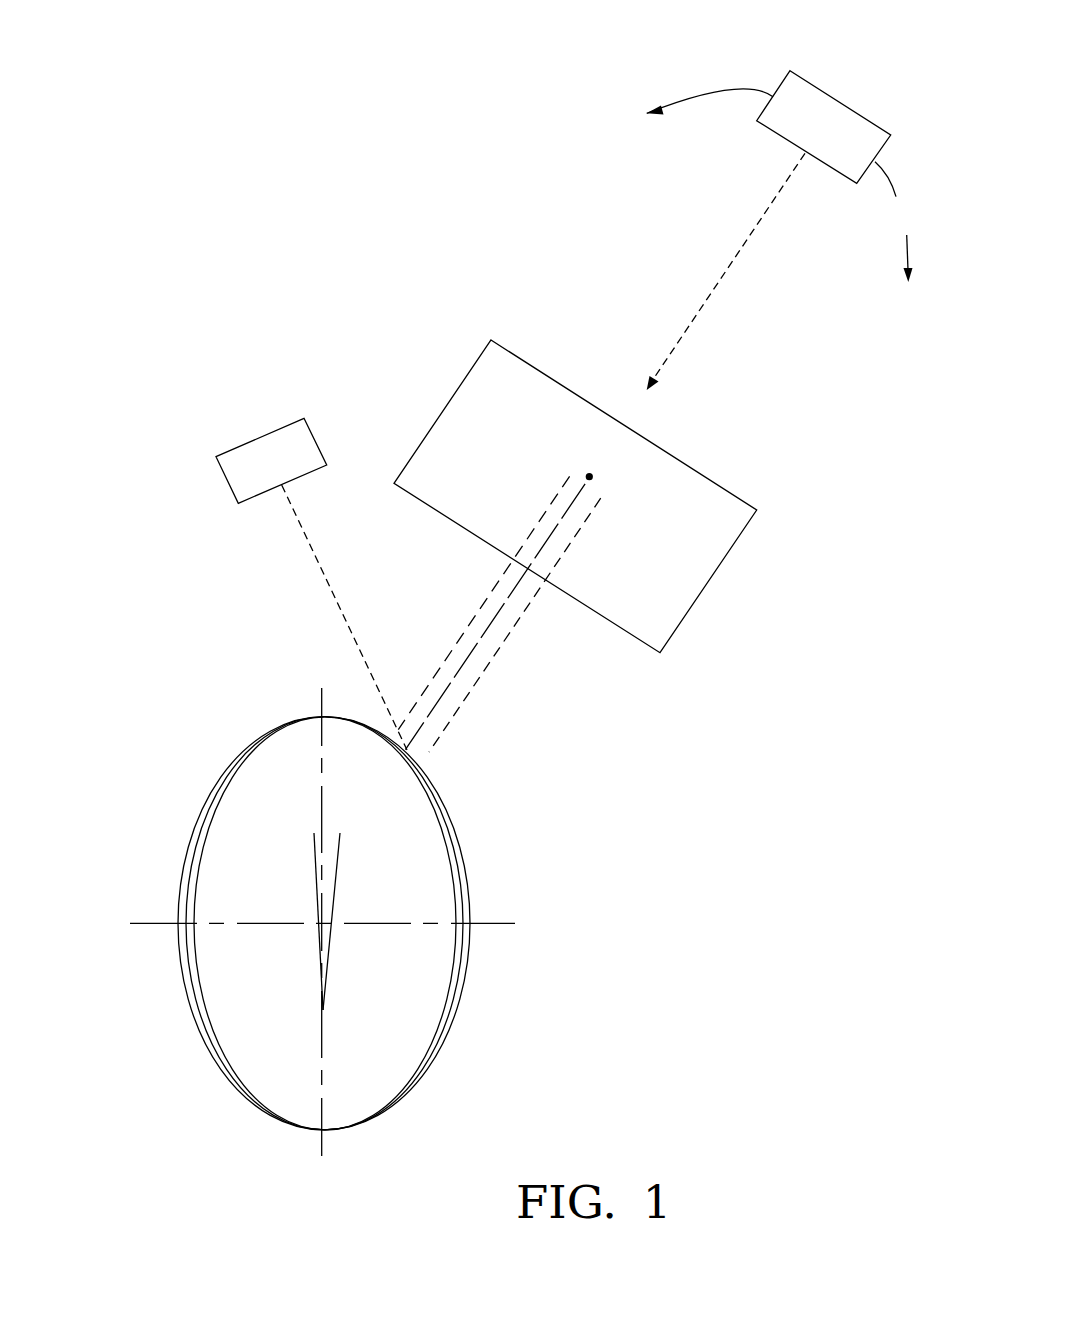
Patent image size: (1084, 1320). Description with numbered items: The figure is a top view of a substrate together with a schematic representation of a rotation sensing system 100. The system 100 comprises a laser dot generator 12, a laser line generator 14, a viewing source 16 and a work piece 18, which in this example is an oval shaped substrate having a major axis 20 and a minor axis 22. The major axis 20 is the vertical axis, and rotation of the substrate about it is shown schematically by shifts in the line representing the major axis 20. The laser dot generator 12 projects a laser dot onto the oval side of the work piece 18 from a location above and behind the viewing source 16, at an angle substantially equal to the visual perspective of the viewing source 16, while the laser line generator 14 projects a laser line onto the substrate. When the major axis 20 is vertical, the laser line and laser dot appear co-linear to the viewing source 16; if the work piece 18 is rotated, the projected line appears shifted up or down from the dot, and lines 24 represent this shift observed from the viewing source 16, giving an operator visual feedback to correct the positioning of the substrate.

The rotation sensing system 100 is at (203, 333).
The laser dot generator 12 is at (836, 138).
The laser line generator 14 is at (284, 474).
The viewing source 16 is at (669, 554).
The work piece 18 is at (210, 777).
The major axis 20 is at (320, 702).
The minor axis 22 is at (143, 923).
The lines 24 is at (488, 665).